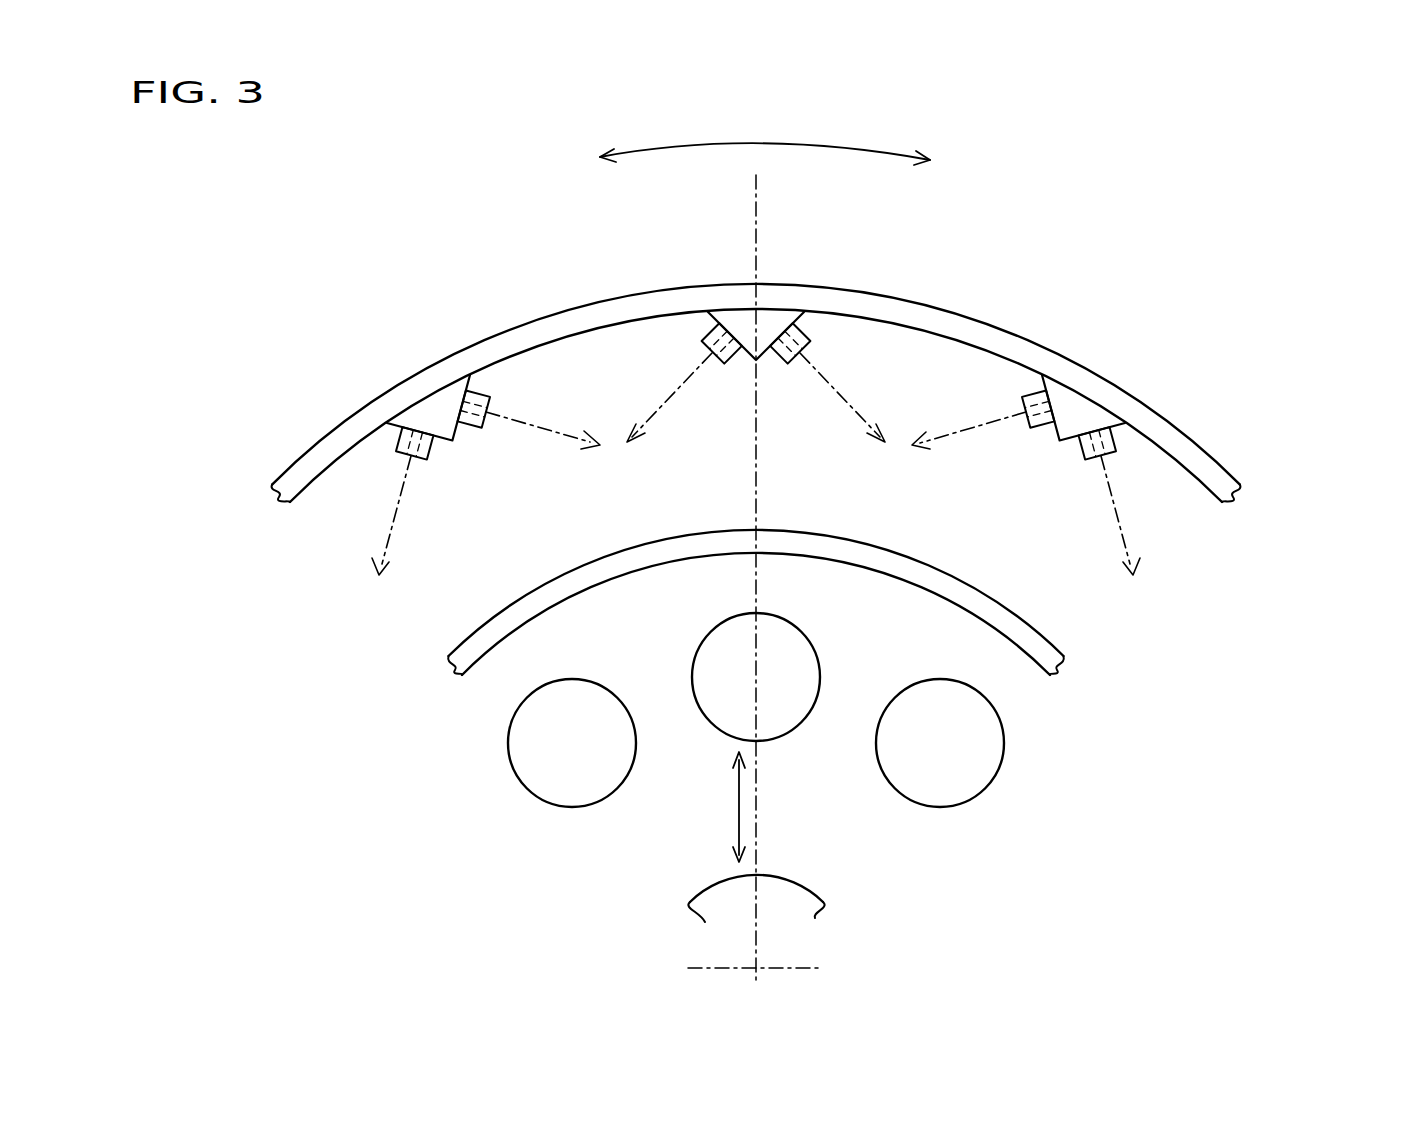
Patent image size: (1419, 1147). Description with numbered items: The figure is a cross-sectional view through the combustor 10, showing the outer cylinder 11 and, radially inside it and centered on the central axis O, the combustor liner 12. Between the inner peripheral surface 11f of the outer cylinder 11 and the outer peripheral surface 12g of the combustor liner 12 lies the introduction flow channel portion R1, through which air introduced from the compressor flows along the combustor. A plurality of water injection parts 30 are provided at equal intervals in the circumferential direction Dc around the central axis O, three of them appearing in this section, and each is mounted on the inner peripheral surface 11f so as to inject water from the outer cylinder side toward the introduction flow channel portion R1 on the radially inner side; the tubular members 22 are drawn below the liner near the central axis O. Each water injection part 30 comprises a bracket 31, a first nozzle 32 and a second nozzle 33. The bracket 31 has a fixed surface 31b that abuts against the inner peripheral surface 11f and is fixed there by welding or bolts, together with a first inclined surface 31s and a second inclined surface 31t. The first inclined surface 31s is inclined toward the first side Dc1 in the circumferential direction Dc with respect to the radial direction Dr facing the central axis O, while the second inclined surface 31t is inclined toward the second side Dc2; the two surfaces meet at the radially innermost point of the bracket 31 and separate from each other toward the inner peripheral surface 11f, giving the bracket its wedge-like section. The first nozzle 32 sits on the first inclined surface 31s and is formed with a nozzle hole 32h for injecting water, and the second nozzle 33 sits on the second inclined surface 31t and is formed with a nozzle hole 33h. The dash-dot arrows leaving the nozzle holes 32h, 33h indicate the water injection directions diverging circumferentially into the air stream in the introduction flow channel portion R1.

The combustor 10 is at (381, 284).
The outer cylinder 11 is at (355, 412).
The inner peripheral surface 11f is at (347, 452).
The combustor liner 12 is at (490, 615).
The outer peripheral surface 12g is at (1042, 632).
The tubes 22 is at (815, 650).
The water injection part 30 is at (748, 354).
The bracket 31 is at (442, 398).
The fixed surface 31b is at (738, 309).
The second inclined surface 31t is at (707, 312).
The first inclined surface 31s is at (807, 313).
The first nozzle 32 is at (786, 366).
The nozzle hole 32h is at (808, 350).
The second nozzle 33 is at (718, 362).
The nozzle hole 33h is at (705, 348).
The introduction flow channel portion R1 is at (885, 335).
The circumferential direction Dc is at (765, 133).
The first side in the circumferential direction Dc1 is at (960, 154).
The second side in the circumferential direction Dc2 is at (572, 154).
The radial direction Dr is at (725, 807).
The central axis O is at (903, 920).